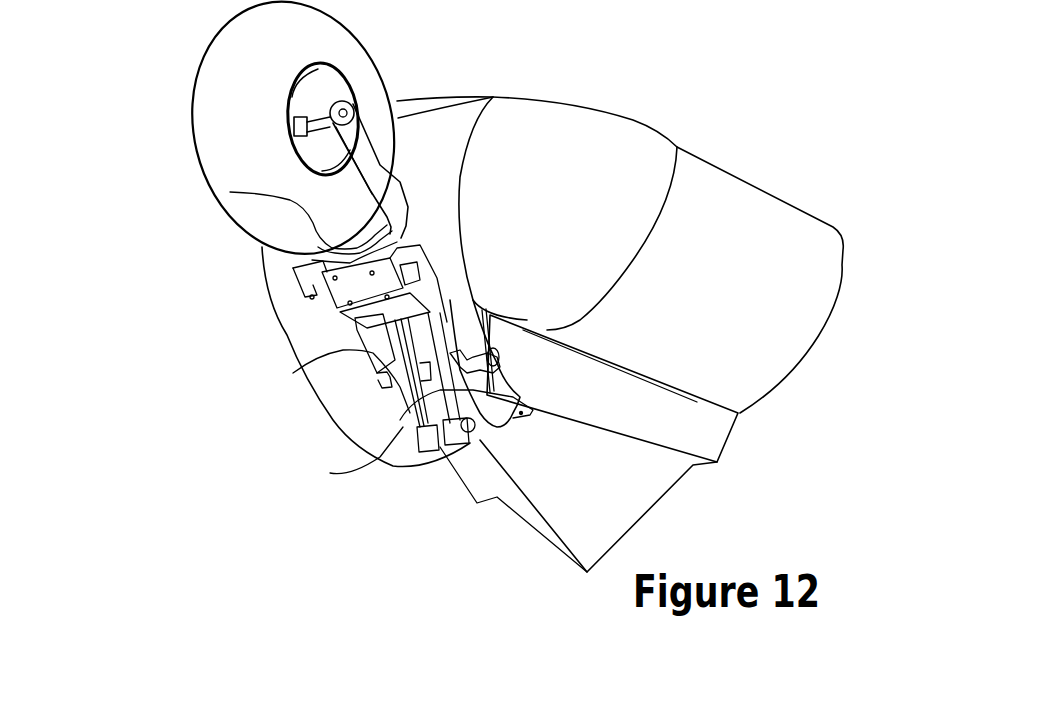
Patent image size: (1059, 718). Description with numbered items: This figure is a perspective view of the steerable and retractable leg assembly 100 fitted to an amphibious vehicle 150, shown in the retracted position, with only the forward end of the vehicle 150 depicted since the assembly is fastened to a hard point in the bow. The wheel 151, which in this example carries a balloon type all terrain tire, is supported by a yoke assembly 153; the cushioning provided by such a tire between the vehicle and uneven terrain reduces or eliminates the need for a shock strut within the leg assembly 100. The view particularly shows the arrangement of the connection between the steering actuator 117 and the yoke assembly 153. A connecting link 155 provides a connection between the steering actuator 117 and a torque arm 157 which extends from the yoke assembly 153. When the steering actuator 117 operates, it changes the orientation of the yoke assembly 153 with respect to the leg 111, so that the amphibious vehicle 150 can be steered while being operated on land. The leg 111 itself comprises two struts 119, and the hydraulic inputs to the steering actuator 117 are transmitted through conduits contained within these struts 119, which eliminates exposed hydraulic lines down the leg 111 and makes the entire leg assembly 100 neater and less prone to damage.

The steerable and retractable leg assembly 100 is at (395, 453).
The leg 111 is at (330, 318).
The steering actuator 117 is at (330, 350).
The struts 119 is at (463, 293).
The amphibious vehicle 150 is at (707, 167).
The wheel 151 is at (190, 92).
The yoke assembly 153 is at (413, 97).
The connecting link 155 is at (312, 260).
The torque arm 157 is at (232, 193).